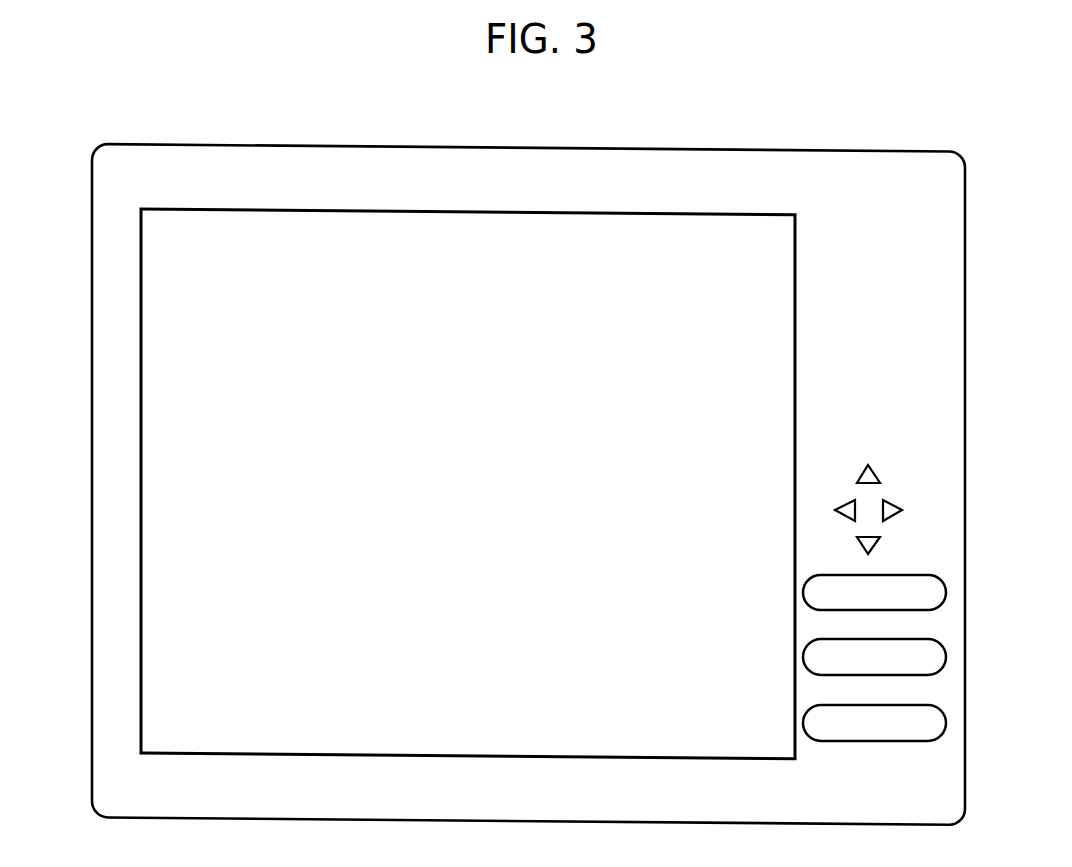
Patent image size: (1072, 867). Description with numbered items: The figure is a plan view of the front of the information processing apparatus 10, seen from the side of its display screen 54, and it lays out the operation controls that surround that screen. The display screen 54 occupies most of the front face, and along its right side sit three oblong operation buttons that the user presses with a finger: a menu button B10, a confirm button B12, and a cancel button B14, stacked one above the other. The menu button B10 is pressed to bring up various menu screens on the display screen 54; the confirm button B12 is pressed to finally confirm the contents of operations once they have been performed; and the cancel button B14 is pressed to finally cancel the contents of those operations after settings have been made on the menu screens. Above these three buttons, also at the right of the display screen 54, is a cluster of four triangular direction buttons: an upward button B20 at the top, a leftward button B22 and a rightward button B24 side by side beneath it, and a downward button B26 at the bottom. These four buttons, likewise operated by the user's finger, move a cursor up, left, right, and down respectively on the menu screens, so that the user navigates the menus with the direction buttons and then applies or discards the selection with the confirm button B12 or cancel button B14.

The information processing apparatus 10 is at (753, 138).
The display screen 54 is at (452, 493).
The upward button B20 is at (879, 472).
The leftward button B22 is at (835, 511).
The rightward button B24 is at (902, 510).
The downward button B26 is at (880, 540).
The menu button B10 is at (947, 589).
The confirm button B12 is at (947, 655).
The cancel button B14 is at (947, 720).